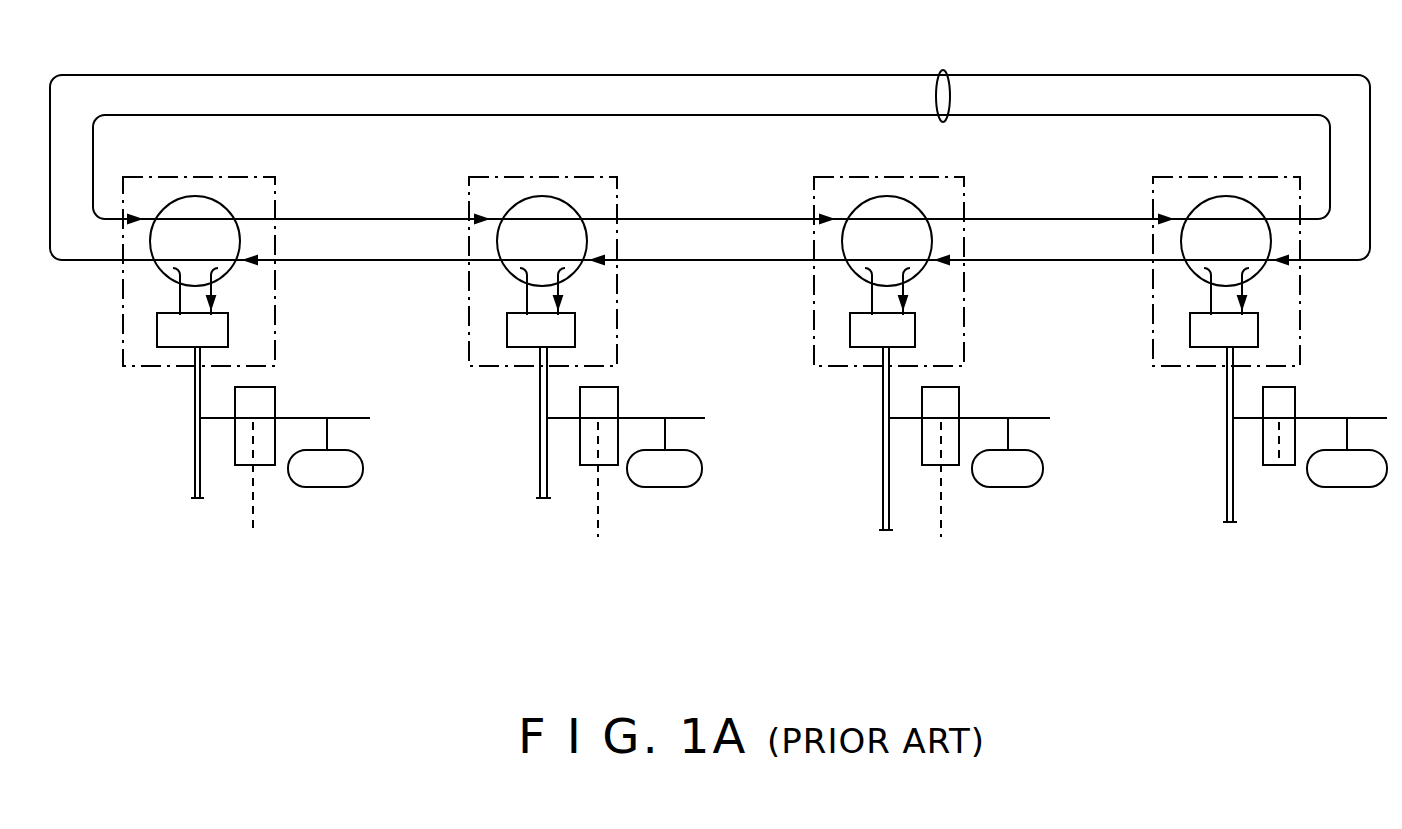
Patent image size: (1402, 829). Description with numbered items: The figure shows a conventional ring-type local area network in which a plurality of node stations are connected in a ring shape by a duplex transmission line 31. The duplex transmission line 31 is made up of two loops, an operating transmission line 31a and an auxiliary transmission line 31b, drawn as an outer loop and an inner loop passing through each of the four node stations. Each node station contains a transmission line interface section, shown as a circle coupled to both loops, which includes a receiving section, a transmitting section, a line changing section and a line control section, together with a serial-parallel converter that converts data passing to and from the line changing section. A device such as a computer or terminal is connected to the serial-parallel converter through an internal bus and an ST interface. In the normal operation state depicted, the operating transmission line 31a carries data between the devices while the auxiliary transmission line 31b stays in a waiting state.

The duplex transmission line 31 is at (945, 70).
The operating transmission line 31a is at (683, 75).
The auxiliary transmission line 31b is at (712, 115).